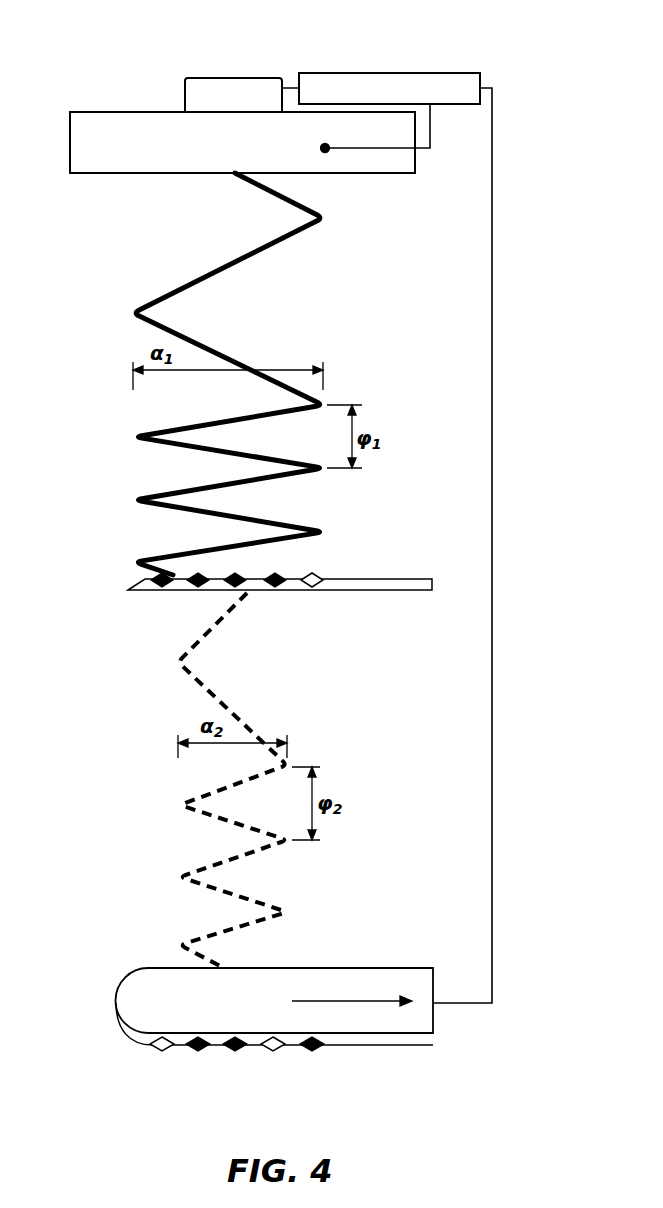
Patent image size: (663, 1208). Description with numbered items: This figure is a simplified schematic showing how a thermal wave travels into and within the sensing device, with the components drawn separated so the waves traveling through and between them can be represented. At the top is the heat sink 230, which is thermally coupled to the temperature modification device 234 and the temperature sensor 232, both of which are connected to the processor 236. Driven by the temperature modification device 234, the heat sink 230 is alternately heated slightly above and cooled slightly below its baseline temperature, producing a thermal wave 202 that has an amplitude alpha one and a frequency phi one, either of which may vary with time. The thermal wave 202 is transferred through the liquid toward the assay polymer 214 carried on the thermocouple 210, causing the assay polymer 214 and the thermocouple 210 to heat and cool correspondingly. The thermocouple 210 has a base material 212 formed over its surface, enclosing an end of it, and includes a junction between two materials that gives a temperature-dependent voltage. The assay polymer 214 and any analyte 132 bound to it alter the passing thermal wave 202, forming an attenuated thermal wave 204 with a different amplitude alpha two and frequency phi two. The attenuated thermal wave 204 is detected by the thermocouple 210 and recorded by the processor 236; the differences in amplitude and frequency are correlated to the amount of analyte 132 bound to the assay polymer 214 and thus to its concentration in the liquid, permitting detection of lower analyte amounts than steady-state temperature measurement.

The heat sink 230 is at (110, 130).
The temperature modification device 234 is at (230, 78).
The processor 236 is at (385, 73).
The temperature sensor 232 is at (377, 150).
The thermal wave 202 is at (217, 352).
The base material 212 is at (432, 577).
The assay polymer 214 is at (320, 575).
The analyte 132 is at (150, 578).
The attenuated thermal wave 204 is at (242, 720).
The thermocouple 210 is at (422, 1020).